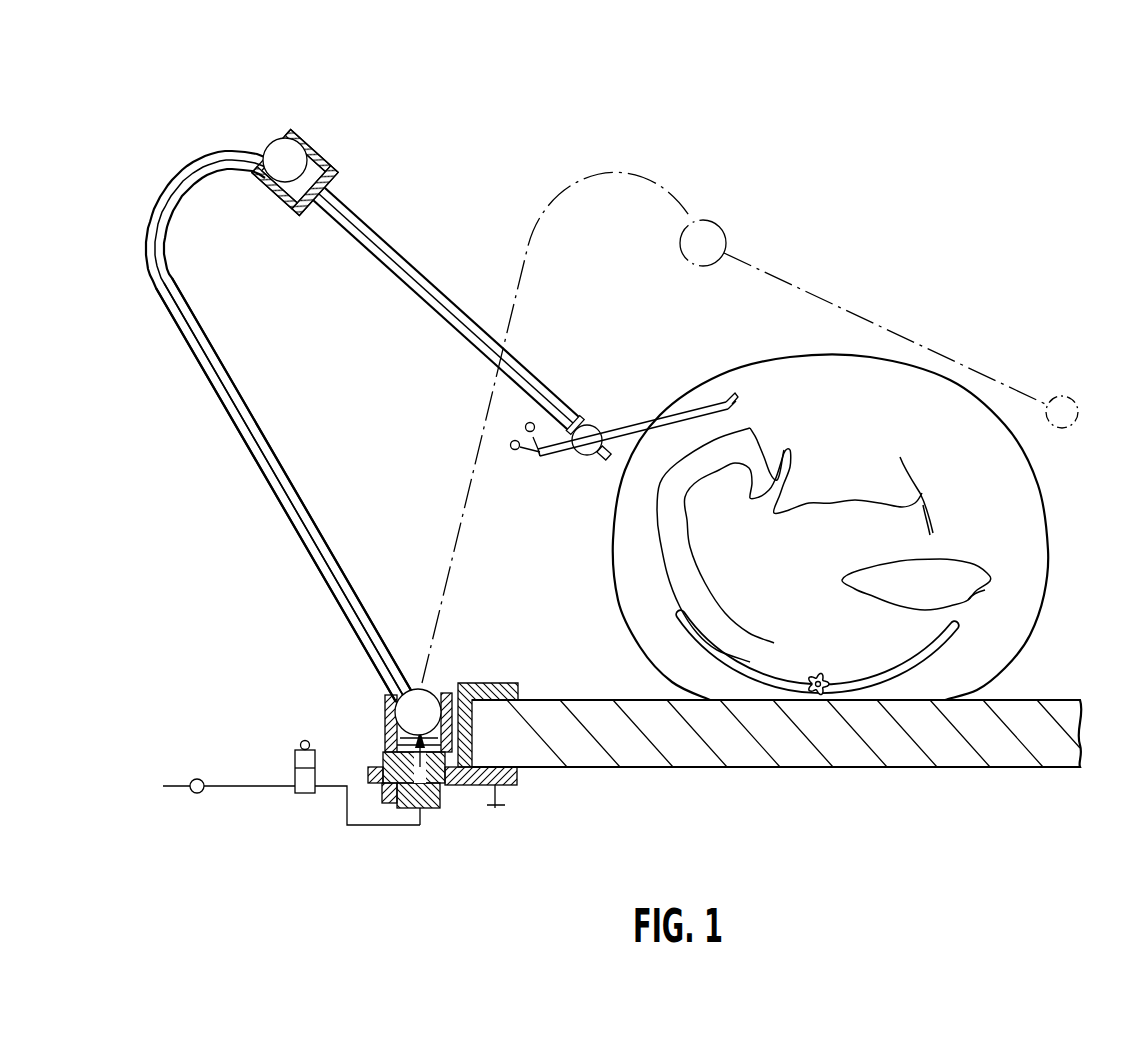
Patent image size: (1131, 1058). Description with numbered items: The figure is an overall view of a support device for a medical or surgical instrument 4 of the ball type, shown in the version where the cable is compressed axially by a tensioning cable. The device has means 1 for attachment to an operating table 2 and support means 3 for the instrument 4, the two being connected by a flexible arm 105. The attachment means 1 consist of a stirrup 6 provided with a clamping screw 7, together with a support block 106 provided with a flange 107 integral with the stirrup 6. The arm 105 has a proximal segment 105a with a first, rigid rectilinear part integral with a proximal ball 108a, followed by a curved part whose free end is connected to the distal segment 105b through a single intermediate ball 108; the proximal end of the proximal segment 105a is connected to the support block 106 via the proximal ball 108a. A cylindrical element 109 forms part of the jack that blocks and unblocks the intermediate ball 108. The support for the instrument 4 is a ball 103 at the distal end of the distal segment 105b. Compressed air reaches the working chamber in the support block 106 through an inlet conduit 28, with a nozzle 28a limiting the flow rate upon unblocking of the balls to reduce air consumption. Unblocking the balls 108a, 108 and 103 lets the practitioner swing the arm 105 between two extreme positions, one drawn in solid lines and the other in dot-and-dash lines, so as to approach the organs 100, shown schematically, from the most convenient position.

The means for attachment to an operating table 1 is at (485, 731).
The operating table 2 is at (552, 712).
The support means for a medical or surgical instrument 3 is at (570, 377).
The medical or surgical instrument 4 is at (648, 427).
The stirrup 6 is at (520, 774).
The clamping screw 7 is at (497, 806).
The compressed air inlet conduit 28 is at (248, 788).
The nozzle 28a is at (293, 768).
The organs 100 is at (928, 407).
The ball 103 is at (611, 404).
The flexible arm 105 is at (228, 132).
The proximal segment 105a is at (284, 549).
The distal segment 105b is at (494, 314).
The support block 106 is at (384, 732).
The flange 107 is at (457, 797).
The intermediate ball 108 is at (293, 157).
The proximal ball 108a is at (410, 710).
The cylindrical element 109 is at (278, 193).